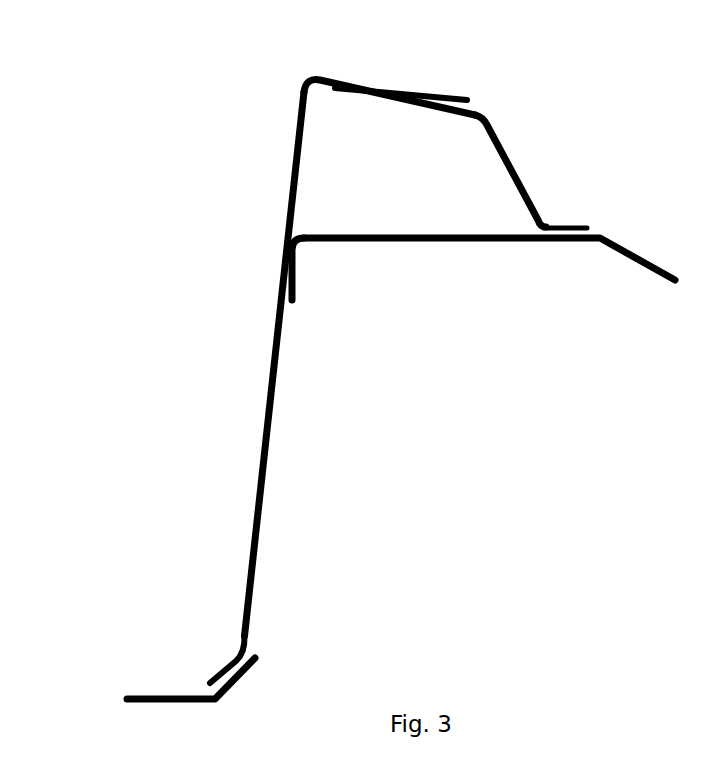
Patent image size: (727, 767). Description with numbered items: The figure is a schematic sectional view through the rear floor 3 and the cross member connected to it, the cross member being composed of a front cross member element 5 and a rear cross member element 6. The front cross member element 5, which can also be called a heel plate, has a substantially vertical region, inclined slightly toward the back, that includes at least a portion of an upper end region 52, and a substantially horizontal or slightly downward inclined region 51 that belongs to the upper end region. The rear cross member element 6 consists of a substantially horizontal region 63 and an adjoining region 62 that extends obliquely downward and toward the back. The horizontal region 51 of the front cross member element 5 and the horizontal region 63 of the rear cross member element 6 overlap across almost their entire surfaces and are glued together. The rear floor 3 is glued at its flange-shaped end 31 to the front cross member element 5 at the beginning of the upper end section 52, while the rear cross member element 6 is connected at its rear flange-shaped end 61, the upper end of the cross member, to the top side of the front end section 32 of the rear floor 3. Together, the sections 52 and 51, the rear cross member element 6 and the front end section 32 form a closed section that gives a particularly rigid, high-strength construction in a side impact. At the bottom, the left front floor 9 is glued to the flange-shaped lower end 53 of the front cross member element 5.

The rear floor 3 is at (535, 290).
The flange-shaped end 31 is at (292, 262).
The front end section 32 is at (420, 242).
The front cross member element 5 is at (220, 340).
The horizontal region 51 is at (387, 83).
The upper end region 52 is at (293, 148).
The flange-shaped lower end 53 is at (225, 663).
The rear cross member element 6 is at (525, 133).
The rear flange-shaped end 61 is at (562, 225).
The oblique region 62 is at (505, 162).
The horizontal region 63 is at (377, 100).
The left front floor 9 is at (128, 697).